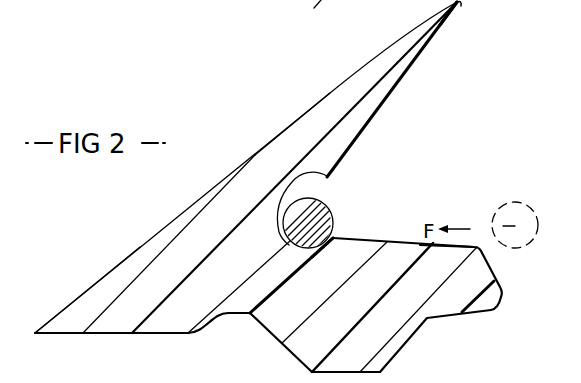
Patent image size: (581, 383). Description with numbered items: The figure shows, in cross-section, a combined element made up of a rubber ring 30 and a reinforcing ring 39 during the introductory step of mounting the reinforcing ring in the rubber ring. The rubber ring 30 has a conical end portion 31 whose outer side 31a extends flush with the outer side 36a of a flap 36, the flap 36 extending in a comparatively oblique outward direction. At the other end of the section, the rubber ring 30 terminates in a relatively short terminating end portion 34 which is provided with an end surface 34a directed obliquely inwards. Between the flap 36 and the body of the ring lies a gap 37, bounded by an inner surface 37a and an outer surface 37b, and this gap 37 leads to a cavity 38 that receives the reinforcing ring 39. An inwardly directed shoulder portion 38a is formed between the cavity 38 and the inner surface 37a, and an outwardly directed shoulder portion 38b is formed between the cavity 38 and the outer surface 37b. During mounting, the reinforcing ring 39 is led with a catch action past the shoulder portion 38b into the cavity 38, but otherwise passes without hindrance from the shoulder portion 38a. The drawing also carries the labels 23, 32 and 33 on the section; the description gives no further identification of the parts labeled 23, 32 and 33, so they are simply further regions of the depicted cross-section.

The sign character / panel 23 is at (305, 10).
The rubber ring 30 is at (262, 192).
The conical end portion 31 is at (65, 327).
The outer side of the conical end portion 31a is at (84, 292).
The transition bump 32 is at (230, 315).
The block bottom surface 33 is at (352, 373).
The terminating end portion 34 is at (462, 283).
The end surface 34a is at (494, 283).
The flap 36 is at (389, 68).
The outer side of the flap 36a is at (318, 104).
The gap 37 is at (417, 129).
The inner surface of the gap 37a is at (460, 243).
The outer surface of the gap 37b is at (438, 34).
The cavity 38 is at (303, 190).
The inwardly directed shoulder portion 38a is at (333, 177).
The outwardly directed shoulder portion 38b is at (336, 236).
The reinforcing ring 39 is at (316, 226).